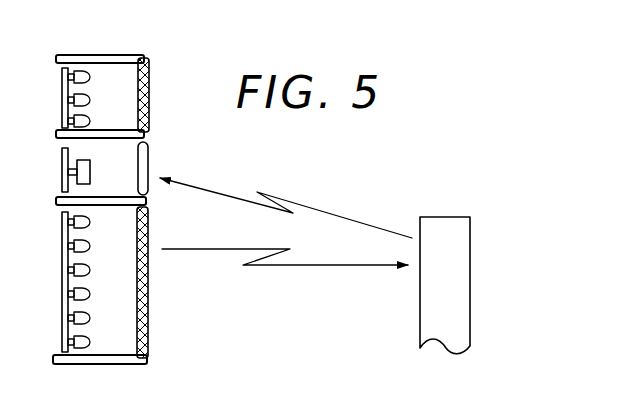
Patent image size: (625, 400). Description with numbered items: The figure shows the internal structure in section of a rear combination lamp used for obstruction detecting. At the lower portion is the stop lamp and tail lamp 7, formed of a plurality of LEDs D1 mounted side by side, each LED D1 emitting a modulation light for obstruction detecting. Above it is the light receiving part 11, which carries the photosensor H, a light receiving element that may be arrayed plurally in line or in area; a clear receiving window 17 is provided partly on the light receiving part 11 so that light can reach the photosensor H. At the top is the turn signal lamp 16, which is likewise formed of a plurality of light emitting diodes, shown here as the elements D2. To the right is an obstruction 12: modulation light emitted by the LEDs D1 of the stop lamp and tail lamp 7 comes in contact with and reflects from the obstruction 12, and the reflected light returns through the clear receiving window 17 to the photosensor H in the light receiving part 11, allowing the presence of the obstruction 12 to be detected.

The turn signal lamp 16 is at (104, 73).
The light receiving part 11 is at (136, 171).
The clear receiving window 17 is at (147, 187).
The stop lamp and tail lamp 7 is at (124, 285).
The obstruction 12 is at (465, 290).
The LED D1 is at (94, 294).
The photodiodes D2 is at (94, 100).
The photosensor H is at (90, 172).